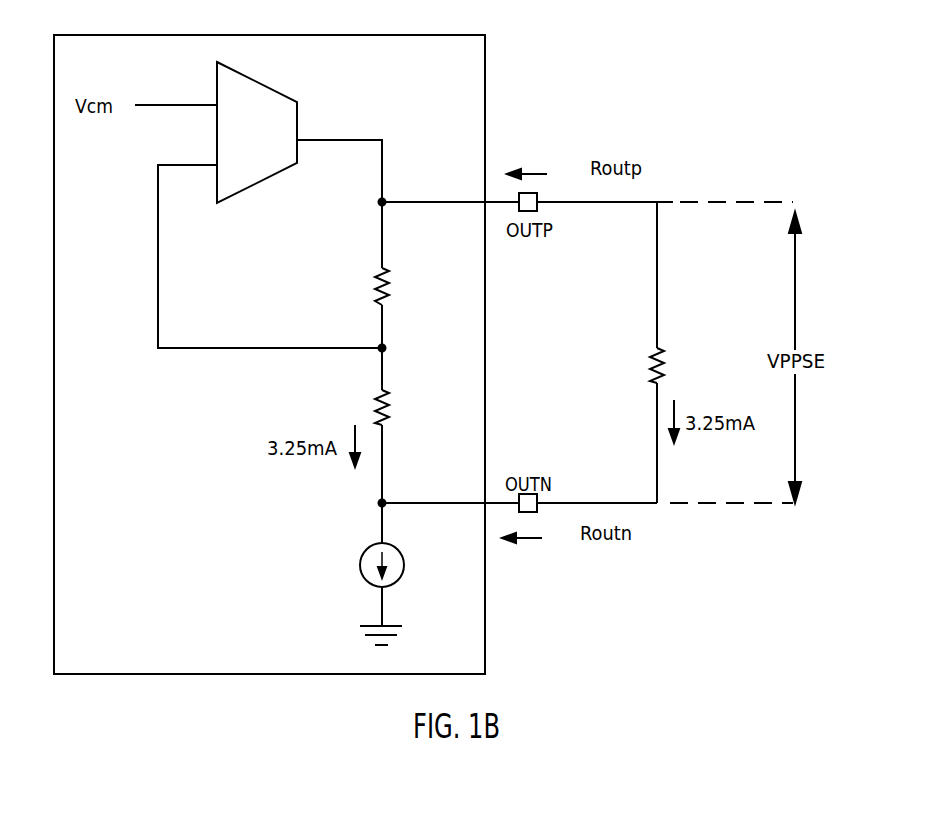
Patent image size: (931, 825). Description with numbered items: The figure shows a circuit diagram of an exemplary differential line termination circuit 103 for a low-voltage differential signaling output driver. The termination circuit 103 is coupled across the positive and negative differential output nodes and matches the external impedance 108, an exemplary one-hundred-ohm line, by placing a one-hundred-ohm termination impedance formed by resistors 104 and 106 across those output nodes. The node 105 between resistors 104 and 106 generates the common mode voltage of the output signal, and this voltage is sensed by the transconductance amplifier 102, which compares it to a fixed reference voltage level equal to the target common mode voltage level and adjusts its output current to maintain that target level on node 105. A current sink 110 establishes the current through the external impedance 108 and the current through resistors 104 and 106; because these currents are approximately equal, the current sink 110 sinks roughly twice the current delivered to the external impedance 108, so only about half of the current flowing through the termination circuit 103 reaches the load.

The transconductance amplifier 102 is at (215, 72).
The termination circuit 103 is at (170, 35).
The resistor 104 is at (373, 277).
The node 105 is at (385, 346).
The resistor 106 is at (375, 400).
The external impedance 108 is at (655, 352).
The current sink 110 is at (362, 547).